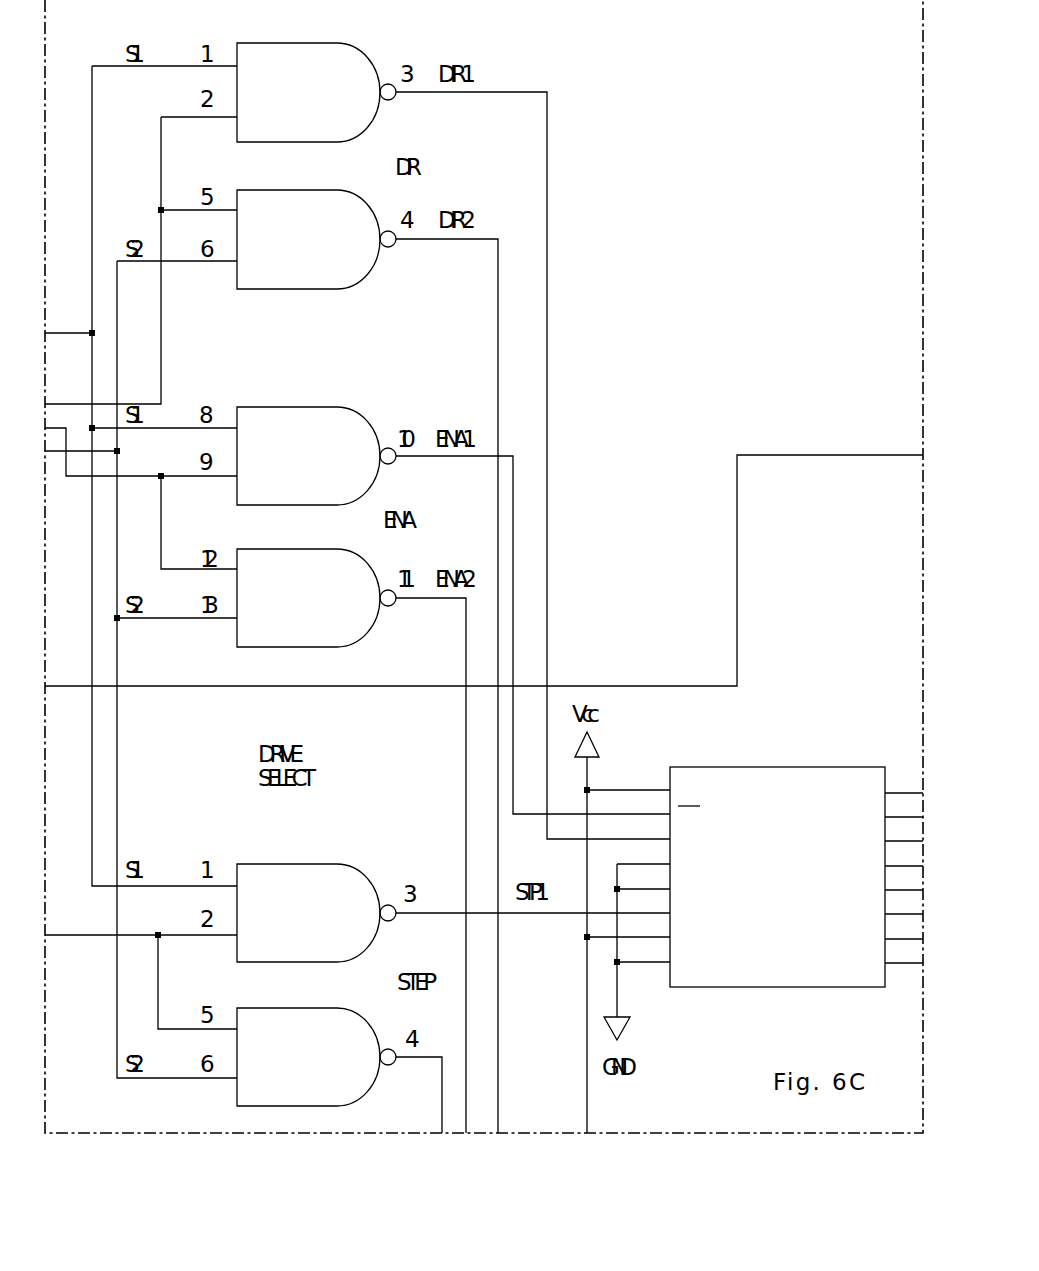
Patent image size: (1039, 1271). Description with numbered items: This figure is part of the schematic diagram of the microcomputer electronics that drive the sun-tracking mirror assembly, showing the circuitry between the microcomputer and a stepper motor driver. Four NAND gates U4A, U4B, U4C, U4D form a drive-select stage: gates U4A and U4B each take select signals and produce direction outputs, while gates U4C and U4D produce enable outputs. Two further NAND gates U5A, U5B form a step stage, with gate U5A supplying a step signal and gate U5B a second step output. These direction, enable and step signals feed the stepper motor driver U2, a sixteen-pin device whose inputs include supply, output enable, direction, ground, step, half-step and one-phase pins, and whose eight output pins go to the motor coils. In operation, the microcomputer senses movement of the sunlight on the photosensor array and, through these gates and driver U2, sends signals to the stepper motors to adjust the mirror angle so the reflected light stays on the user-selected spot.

The NAND gate U4A (direction select DIR1) U4A is at (316, 80).
The NAND gate U4B (direction select DIR2) U4B is at (316, 226).
The NAND gate U4C (enable ENA1) U4C is at (316, 441).
The NAND gate U4D (enable ENA2) U4D is at (316, 584).
The NAND gate U5A (step STP1) U5A is at (316, 896).
The NAND gate U5B (step) U5B is at (316, 1041).
The stepper motor driver DRIVE1 U2 is at (780, 882).